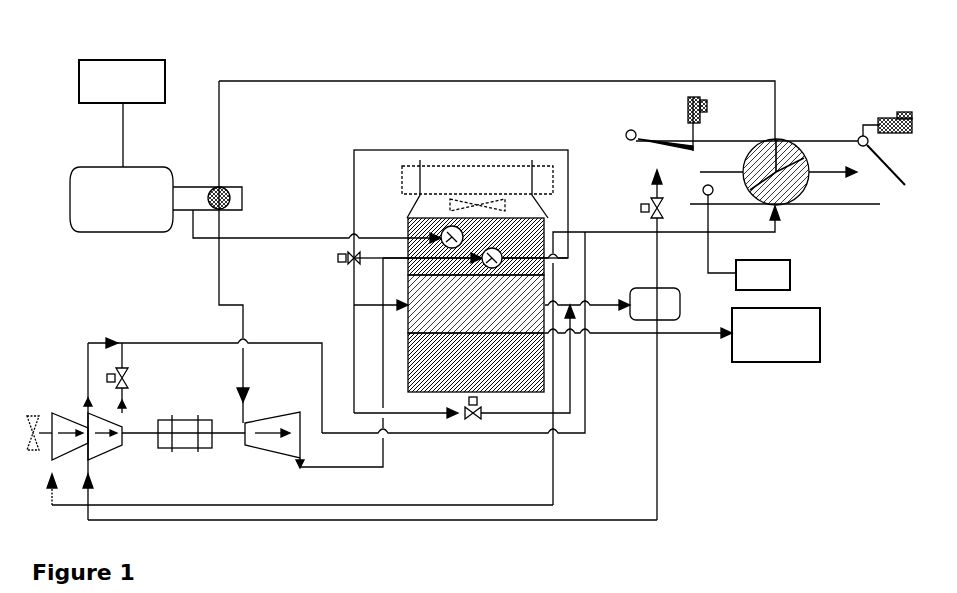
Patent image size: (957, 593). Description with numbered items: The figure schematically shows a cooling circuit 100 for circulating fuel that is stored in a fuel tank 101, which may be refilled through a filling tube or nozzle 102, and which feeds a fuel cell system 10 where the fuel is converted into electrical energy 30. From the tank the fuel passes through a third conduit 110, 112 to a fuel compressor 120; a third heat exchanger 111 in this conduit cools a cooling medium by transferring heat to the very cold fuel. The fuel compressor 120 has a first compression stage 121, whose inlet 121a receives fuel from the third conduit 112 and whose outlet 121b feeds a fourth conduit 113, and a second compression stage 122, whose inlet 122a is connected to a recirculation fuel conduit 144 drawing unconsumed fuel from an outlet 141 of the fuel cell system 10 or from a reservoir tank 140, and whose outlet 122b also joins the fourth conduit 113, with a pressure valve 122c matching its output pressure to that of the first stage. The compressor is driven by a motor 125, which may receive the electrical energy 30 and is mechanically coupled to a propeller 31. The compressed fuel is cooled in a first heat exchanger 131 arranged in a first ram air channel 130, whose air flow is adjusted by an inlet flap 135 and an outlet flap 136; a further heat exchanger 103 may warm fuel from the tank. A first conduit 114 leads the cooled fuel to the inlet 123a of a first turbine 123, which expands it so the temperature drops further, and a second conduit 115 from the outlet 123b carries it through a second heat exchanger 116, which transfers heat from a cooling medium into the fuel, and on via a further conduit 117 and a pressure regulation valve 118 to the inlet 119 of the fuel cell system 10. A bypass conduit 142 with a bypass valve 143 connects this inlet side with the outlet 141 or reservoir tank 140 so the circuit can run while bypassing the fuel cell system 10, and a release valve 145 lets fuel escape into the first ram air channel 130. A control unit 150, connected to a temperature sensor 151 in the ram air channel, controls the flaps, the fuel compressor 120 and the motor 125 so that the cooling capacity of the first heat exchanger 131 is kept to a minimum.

The cooling circuit 100 is at (256, 36).
The fuel cell system 10 is at (398, 220).
The electrical energy 30 is at (822, 336).
The propeller 31 is at (33, 455).
The fuel tank 101 is at (140, 180).
The filling tube or nozzle 102 is at (122, 70).
The further heat exchanger 103 is at (230, 190).
The third conduit 110 is at (280, 237).
The third heat exchanger 111 is at (449, 227).
The third conduit 112 is at (657, 457).
The fourth conduit 113 is at (148, 343).
The first conduit 114 is at (393, 80).
The second conduit 115 is at (338, 470).
The second heat exchanger 116 is at (492, 249).
The further conduit 117 is at (436, 150).
The pressure regulation valve 118 is at (338, 258).
The inlet 119 is at (352, 305).
The fuel compressor 120 is at (50, 390).
The first compression stage 121 is at (64, 426).
The inlet of the first compression stage 121a is at (59, 467).
The outlet of the first compression stage 121b is at (85, 410).
The second compression stage 122 is at (108, 444).
The inlet of the second compression stage 122a is at (95, 468).
The outlet of the second compression stage 122b is at (126, 412).
The pressure valve 122c is at (130, 378).
The first turbine 123 is at (262, 440).
The inlet of the first turbine 123a is at (248, 421).
The outlet of the first turbine 123b is at (300, 470).
The motor 125 is at (192, 449).
The first ram air channel 130 is at (798, 110).
The first heat exchanger 131 is at (793, 175).
The inlet flap 135 is at (642, 126).
The outlet flap 136 is at (891, 185).
The reservoir tank 140 is at (680, 318).
The outlet 141 is at (597, 305).
The bypass conduit 142 is at (420, 436).
The bypass valve 143 is at (472, 422).
The recirculation fuel conduit 144 is at (657, 400).
The release valve 145 is at (650, 193).
The control unit 150 is at (790, 272).
The temperature sensor 151 is at (713, 193).